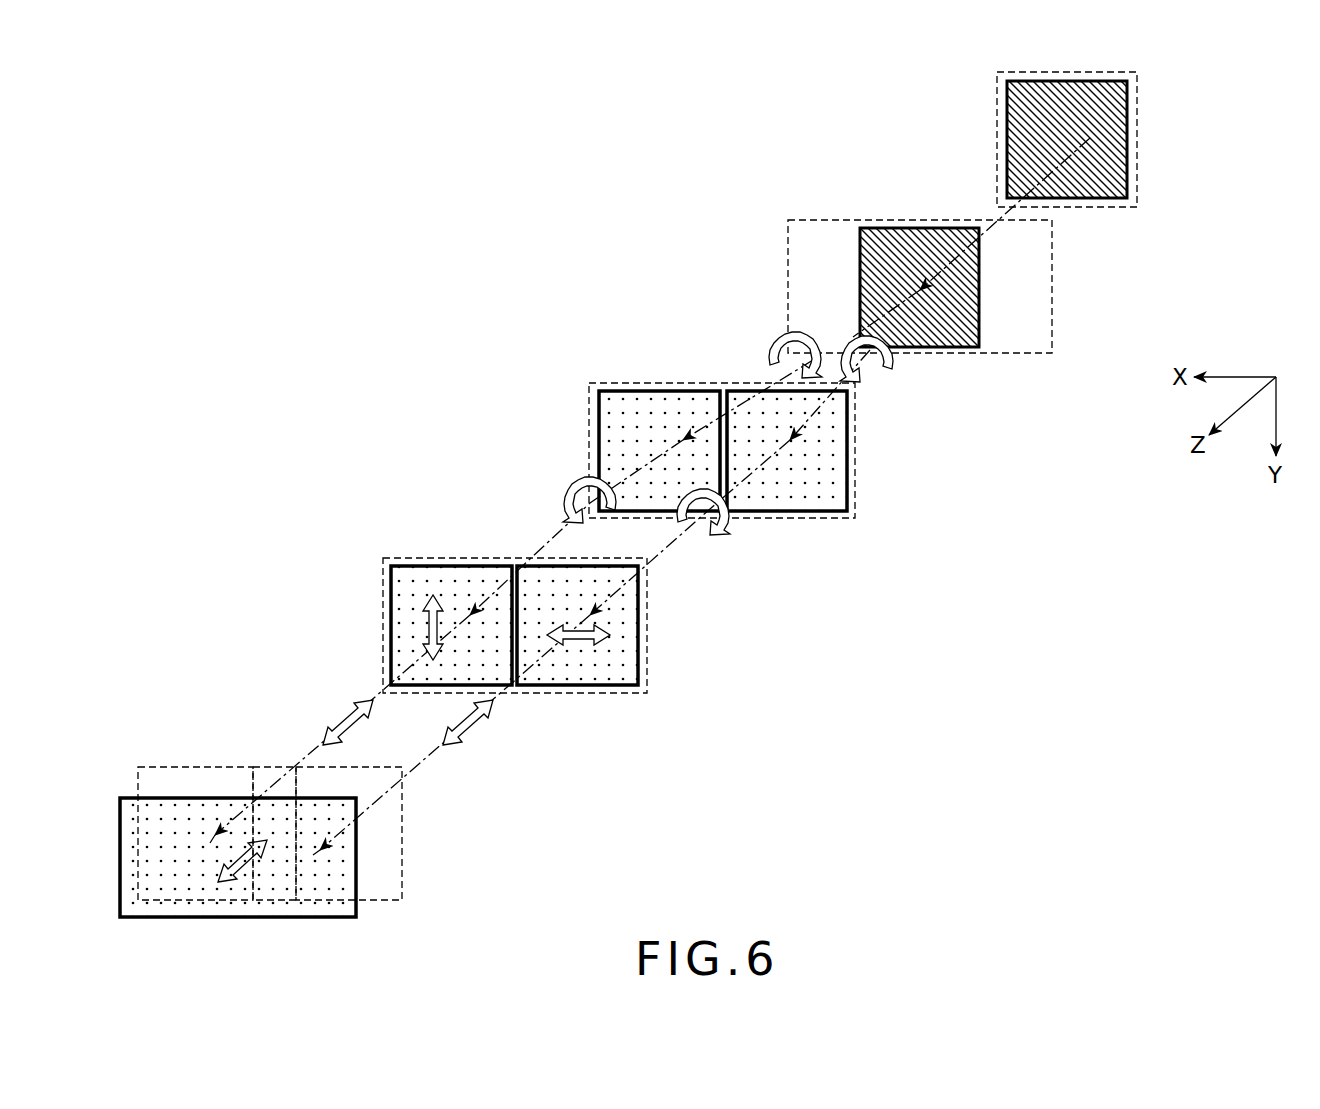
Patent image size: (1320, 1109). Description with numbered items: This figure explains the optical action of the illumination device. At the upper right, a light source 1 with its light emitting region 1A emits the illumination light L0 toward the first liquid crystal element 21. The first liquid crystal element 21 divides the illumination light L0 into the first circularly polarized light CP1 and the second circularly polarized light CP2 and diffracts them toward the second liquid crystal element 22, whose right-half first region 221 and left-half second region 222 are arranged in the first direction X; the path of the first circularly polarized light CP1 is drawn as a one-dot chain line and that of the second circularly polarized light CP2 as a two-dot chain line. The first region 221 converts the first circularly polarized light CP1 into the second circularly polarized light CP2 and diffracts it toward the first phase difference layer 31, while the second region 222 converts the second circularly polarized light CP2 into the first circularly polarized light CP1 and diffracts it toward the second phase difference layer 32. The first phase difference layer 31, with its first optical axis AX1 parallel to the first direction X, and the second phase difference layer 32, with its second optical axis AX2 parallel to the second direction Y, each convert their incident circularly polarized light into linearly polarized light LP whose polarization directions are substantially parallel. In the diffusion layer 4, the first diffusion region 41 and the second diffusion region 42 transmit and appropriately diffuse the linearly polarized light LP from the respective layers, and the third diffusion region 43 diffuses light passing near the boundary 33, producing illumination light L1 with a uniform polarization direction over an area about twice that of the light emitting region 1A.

The light source unit 1 is at (1137, 133).
The light emitting region 1A is at (1010, 118).
The illumination light L0 is at (1000, 213).
The first liquid crystal element 21 is at (1052, 285).
The second liquid crystal element 22 is at (855, 486).
The first region 221 is at (850, 443).
The second region 222 is at (596, 409).
The first circularly polarized light CP1 is at (895, 372).
The second circularly polarized light CP2 is at (770, 345).
The first phase difference layer 31 is at (648, 633).
The second phase difference layer 32 is at (412, 556).
The boundary 33 is at (514, 556).
The first optical axis AX1 is at (585, 642).
The second optical axis AX2 is at (428, 626).
The linearly polarized light LP is at (338, 720).
The diffusion layer 4 is at (289, 836).
The first diffusion region 41 is at (367, 777).
The second diffusion region 42 is at (184, 767).
The third diffusion region 43 is at (271, 767).
The illumination light L1 is at (325, 918).